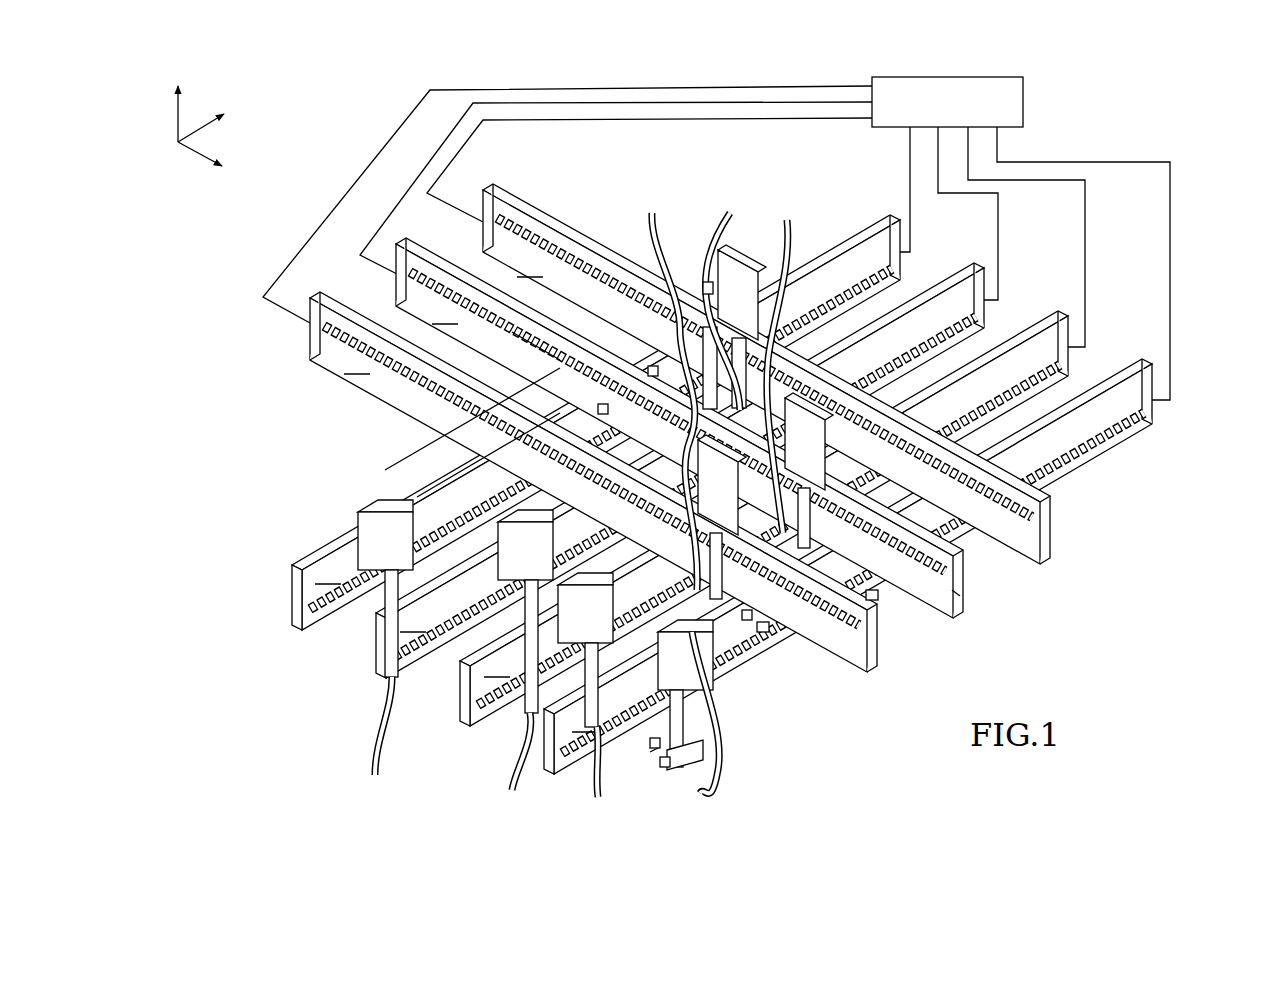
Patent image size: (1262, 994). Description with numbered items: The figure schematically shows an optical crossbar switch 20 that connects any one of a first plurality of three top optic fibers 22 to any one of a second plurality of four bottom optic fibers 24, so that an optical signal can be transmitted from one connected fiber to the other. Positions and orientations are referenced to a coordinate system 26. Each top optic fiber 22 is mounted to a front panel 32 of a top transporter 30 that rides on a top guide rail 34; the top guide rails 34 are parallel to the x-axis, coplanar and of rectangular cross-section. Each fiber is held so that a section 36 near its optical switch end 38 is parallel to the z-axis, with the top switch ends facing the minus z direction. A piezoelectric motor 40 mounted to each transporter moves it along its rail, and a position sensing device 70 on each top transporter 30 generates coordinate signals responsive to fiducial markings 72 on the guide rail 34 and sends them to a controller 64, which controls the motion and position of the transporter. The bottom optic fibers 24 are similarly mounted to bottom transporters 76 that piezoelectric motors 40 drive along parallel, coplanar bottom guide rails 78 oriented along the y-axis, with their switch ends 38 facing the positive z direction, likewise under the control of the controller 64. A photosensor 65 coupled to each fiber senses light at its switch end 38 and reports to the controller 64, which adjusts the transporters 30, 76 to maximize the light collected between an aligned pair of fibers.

The optical crossbar switch 20 is at (1168, 117).
The top optic fibers 22 is at (661, 171).
The bottom optic fibers 24 is at (555, 826).
The coordinate system 26 is at (267, 123).
The top transporter 30 is at (747, 242).
The front panel 32 is at (515, 445).
The top guide rail 34 is at (680, 428).
The section of the optic fiber 36 is at (722, 365).
The optical switch end 38 is at (735, 605).
The piezoelectric motor 40 is at (705, 282).
The controller 64 is at (1026, 100).
The photosensor 65 is at (835, 555).
The position sensing device 70 is at (957, 594).
The fiducial markings 72 is at (512, 332).
The bottom transporter 76 is at (650, 753).
The bottom guide rail 78 is at (722, 494).